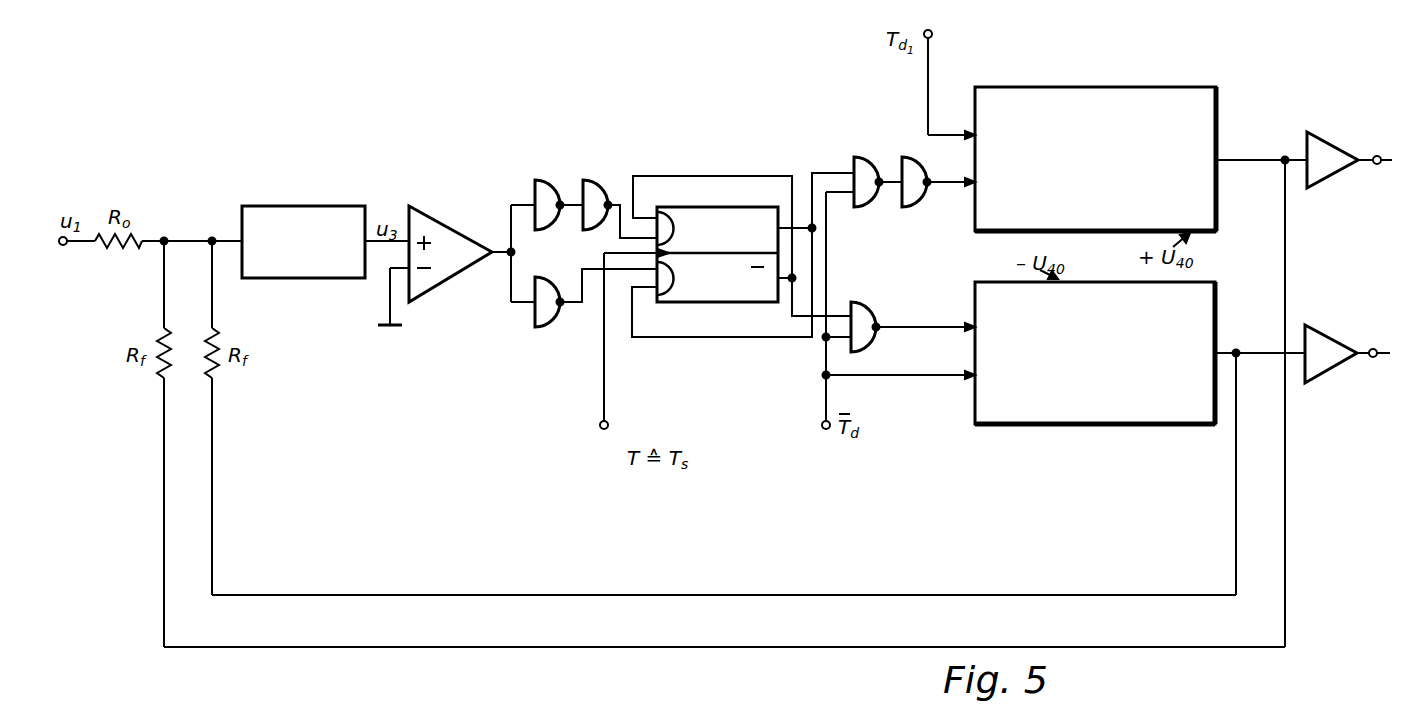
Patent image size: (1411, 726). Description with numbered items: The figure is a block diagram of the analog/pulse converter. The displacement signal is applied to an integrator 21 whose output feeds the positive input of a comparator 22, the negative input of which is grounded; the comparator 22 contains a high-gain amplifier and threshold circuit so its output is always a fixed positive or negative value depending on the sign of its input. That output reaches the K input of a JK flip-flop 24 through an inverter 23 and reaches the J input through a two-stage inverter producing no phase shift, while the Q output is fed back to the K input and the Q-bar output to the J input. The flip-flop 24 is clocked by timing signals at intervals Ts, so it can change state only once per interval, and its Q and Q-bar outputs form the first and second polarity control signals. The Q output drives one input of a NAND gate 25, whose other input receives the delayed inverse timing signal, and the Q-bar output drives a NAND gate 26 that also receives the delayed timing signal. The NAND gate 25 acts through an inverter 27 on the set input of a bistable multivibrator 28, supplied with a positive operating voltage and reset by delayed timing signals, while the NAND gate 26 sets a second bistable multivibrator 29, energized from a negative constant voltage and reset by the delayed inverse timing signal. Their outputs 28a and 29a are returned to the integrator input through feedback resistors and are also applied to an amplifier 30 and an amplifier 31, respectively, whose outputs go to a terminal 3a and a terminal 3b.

The integrator 21 is at (303, 212).
The comparator 22 is at (448, 238).
The inverter 23 is at (539, 316).
The JK flip-flop 24 is at (708, 184).
The NAND gate 25 is at (858, 160).
The NAND gate 26 is at (862, 313).
The inverter 27 is at (908, 203).
The bistable multivibrator 28 is at (987, 106).
The output of multivibrator 28 28a is at (1285, 158).
The bistable multivibrator 29 is at (985, 411).
The output of multivibrator 29 29a is at (1236, 352).
The amplifier 30 is at (1323, 147).
The amplifier 31 is at (1322, 367).
The terminal 3a is at (1382, 144).
The terminal 3b is at (1373, 349).